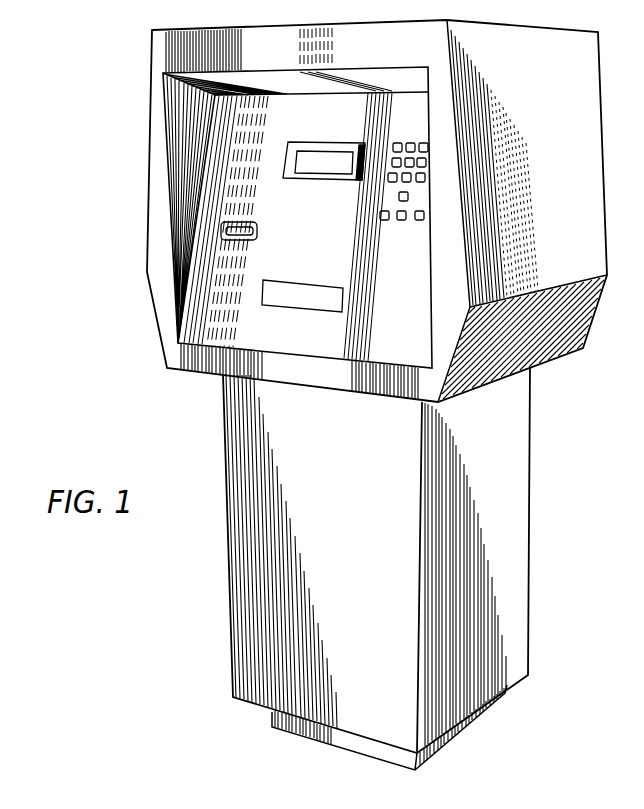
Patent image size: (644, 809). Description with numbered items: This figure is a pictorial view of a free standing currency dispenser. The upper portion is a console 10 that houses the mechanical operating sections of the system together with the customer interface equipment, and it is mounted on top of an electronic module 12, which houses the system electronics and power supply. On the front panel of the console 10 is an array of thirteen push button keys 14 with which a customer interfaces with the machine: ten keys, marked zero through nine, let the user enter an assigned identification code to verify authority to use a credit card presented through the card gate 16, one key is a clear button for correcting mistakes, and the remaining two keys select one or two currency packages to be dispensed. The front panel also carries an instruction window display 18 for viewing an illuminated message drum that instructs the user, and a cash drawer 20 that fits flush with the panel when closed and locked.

The console 10 is at (147, 271).
The electronic module 12 is at (530, 484).
The push button keys 14 is at (400, 224).
The card gate 16 is at (235, 242).
The instruction window display 18 is at (318, 182).
The cash drawer 20 is at (308, 281).